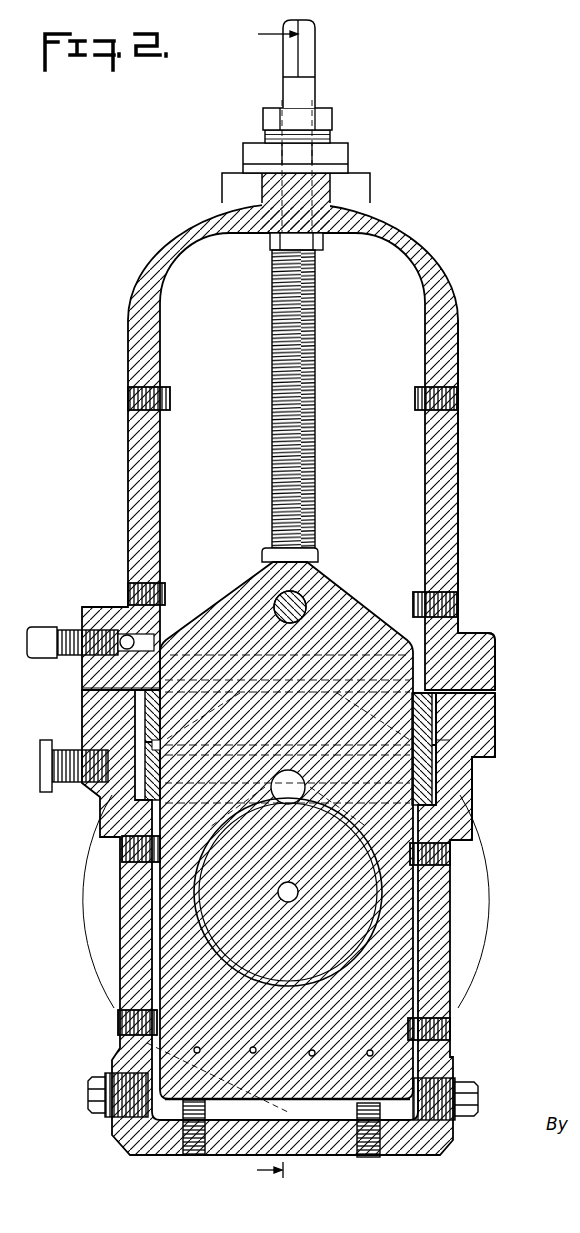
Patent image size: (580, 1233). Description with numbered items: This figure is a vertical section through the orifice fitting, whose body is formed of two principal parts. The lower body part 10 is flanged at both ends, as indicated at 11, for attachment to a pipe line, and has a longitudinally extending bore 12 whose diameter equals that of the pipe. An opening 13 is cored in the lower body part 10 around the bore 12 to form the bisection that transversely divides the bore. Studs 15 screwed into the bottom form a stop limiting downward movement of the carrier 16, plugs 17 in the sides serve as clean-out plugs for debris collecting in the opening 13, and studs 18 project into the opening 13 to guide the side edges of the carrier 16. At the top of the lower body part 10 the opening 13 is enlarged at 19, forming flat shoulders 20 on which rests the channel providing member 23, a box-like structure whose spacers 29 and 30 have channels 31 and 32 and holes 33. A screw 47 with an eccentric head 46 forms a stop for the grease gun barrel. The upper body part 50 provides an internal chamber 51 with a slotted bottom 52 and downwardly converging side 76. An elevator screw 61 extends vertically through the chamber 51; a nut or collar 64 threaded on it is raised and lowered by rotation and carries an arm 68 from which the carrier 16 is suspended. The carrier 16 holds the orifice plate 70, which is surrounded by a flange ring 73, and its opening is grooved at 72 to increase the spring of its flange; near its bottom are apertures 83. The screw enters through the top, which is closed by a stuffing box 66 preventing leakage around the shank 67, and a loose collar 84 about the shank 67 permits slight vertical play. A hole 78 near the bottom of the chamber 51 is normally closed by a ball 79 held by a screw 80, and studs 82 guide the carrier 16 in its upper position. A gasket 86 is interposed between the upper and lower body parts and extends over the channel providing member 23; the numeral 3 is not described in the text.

The section line 3- 3 is at (267, 606).
The shank 67 is at (292, 97).
The stuffing box 66 is at (265, 135).
The loose collar 84 is at (273, 241).
The upper body part 50 is at (450, 358).
The internal chamber 51 is at (405, 480).
The studs 82 is at (130, 402).
The elevator screw 61 is at (272, 430).
The nut or collar 64 is at (305, 557).
The arm 68 is at (282, 596).
The screw 80 is at (68, 630).
The ball 79 is at (125, 637).
The hole 78 is at (155, 640).
The downwardly converging side 76 is at (430, 655).
The slotted bottom 52 is at (418, 690).
The gasket 86 is at (118, 687).
The spacer 29 is at (145, 713).
The channel providing member 23 is at (420, 708).
The channel 31 is at (155, 745).
The enlarged top of opening 19 is at (436, 725).
The holes 33 is at (145, 745).
The channel 32 is at (445, 757).
The spacer 30 is at (420, 780).
The eccentric head 46 is at (45, 780).
The screw 47 is at (78, 768).
The shoulders 20 is at (455, 813).
The studs 18 is at (120, 846).
The lower body part 10 is at (122, 890).
The flange ring 73 is at (372, 881).
The groove 72 is at (380, 898).
The flanges 11 is at (100, 928).
The bore 12 is at (410, 920).
The carrier 16 is at (400, 963).
The orifice plate 70 is at (235, 930).
The plugs 17 is at (108, 1095).
The studs 15 is at (193, 1142).
The apertures 83 is at (369, 1056).
The opening 13 is at (400, 1117).